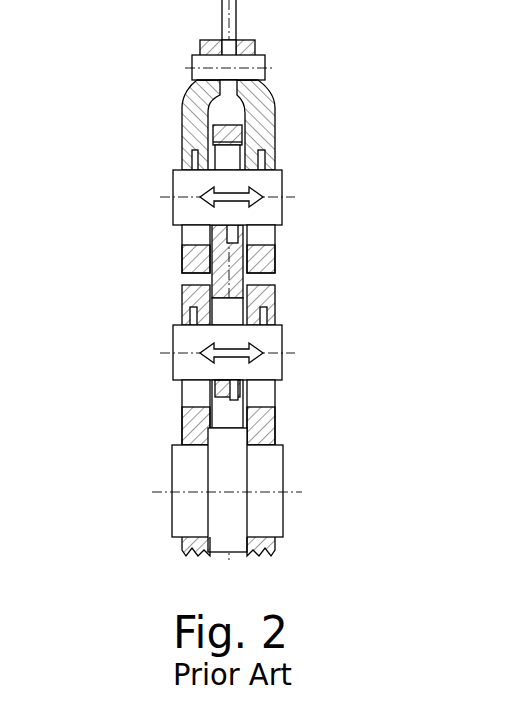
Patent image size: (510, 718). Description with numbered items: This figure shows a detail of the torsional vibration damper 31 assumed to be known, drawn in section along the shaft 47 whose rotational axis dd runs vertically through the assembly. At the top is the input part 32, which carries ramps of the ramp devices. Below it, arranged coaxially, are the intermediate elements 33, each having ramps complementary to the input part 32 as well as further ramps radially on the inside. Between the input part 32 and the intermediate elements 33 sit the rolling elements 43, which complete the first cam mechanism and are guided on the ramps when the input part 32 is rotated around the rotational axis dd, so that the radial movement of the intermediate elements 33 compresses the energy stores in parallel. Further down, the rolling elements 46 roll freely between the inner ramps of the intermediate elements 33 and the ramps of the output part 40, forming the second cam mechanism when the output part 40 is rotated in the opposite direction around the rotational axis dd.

The torsional vibration damper 31 is at (128, 97).
The input part 32 is at (268, 122).
The intermediate elements 33 is at (253, 252).
The output part 40 is at (266, 296).
The rolling elements 43 is at (270, 178).
The rolling elements 46 is at (265, 370).
The shaft 47 is at (270, 468).
The rotational axis dd is at (292, 492).